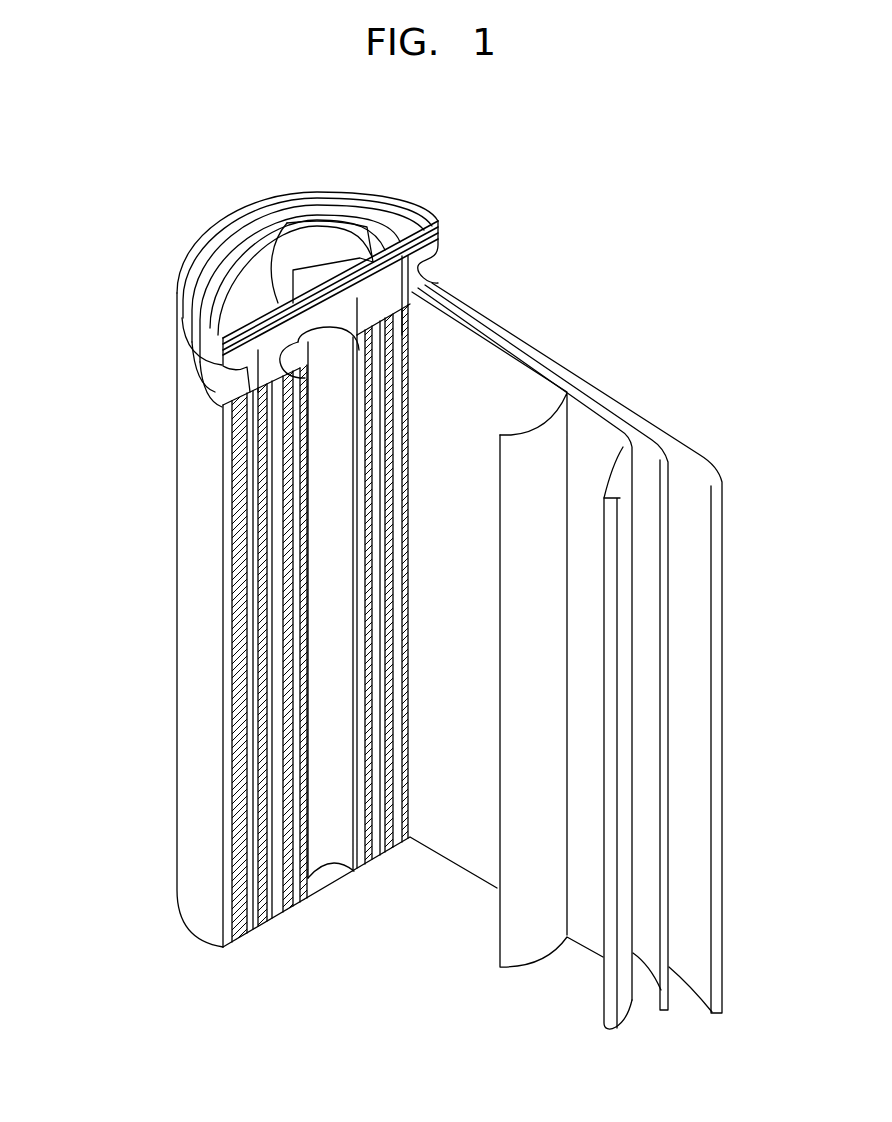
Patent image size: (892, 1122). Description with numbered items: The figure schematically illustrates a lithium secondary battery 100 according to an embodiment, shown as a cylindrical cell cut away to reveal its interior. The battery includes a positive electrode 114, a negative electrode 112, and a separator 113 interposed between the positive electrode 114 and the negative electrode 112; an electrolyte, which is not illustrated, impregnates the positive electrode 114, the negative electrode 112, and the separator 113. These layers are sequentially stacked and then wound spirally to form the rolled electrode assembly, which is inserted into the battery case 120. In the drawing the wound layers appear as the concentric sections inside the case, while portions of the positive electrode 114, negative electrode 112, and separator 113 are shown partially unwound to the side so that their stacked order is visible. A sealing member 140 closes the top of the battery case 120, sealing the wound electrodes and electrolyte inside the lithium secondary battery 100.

The lithium secondary battery 100 is at (619, 236).
The negative electrode 112 is at (696, 450).
The separator 113 is at (536, 432).
The positive electrode 114 is at (620, 440).
The battery case 120 is at (177, 617).
The sealing member 140 is at (300, 237).